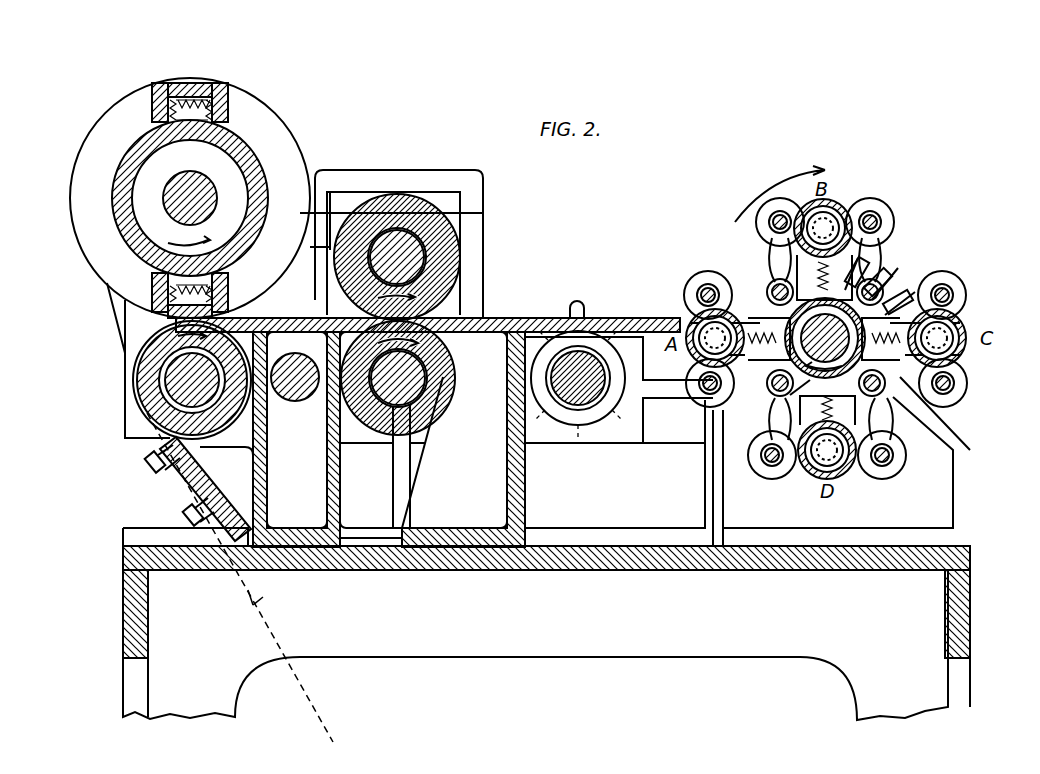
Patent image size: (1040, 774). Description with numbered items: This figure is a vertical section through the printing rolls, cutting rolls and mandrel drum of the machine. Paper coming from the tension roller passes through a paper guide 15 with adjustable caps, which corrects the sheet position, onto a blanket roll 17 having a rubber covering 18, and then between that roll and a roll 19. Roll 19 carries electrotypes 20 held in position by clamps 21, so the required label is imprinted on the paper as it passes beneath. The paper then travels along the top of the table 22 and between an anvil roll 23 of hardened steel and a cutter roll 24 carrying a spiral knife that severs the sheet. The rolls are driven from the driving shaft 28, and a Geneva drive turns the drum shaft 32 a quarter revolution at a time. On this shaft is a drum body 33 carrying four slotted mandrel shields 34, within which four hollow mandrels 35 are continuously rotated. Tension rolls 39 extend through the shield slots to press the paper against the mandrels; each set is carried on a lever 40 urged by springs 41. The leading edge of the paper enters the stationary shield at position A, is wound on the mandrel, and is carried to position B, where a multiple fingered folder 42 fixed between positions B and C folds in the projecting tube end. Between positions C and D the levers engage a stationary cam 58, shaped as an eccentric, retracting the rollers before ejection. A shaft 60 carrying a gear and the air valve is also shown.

The paper guide 15 is at (170, 488).
The blanket roll 17 is at (140, 397).
The rubber covering 18 is at (133, 373).
The roll 19 is at (72, 192).
The electrotypes 20 is at (193, 83).
The clamps 21 is at (152, 97).
The table 22 is at (289, 318).
The anvil roll 23 is at (443, 382).
The cutter roll 24 is at (452, 243).
The driving shaft 28 is at (290, 398).
The drum shaft 32 is at (815, 345).
The drum body 33 is at (792, 312).
The mandrel shields 34 is at (836, 205).
The hollow mandrels 35 is at (848, 222).
The tension rolls 39 is at (762, 228).
The lever 40 is at (782, 256).
The springs 41 is at (816, 280).
The multiple fingered folder 42 is at (897, 283).
The stationary cam 58 is at (792, 395).
The shaft 60 is at (580, 372).